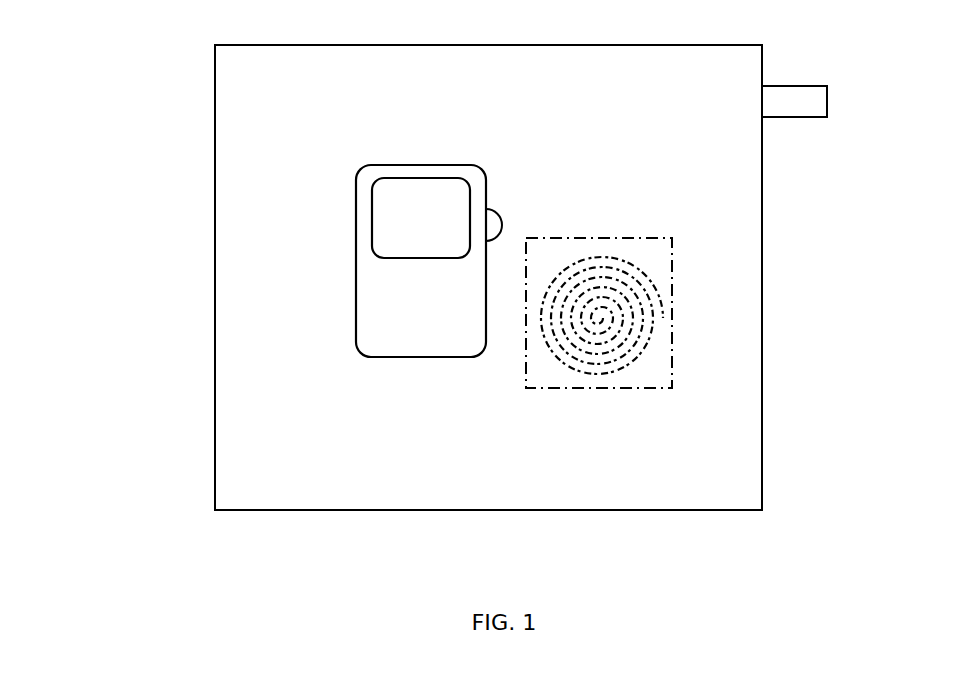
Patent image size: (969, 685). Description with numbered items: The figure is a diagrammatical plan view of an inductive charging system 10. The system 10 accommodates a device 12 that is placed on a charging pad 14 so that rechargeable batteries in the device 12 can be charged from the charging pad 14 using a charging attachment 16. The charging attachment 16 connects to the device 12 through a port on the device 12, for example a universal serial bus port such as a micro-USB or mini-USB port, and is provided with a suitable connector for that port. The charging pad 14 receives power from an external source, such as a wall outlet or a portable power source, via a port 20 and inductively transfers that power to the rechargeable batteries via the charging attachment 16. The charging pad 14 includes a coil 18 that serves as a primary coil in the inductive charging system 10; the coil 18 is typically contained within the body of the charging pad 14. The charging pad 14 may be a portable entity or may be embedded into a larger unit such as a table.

The inductive charging system 10 is at (152, 91).
The device 12 is at (421, 261).
The charging pad 14 is at (488, 277).
The charging attachment 16 is at (513, 222).
The coil 18 is at (599, 344).
The port 20 is at (806, 123).